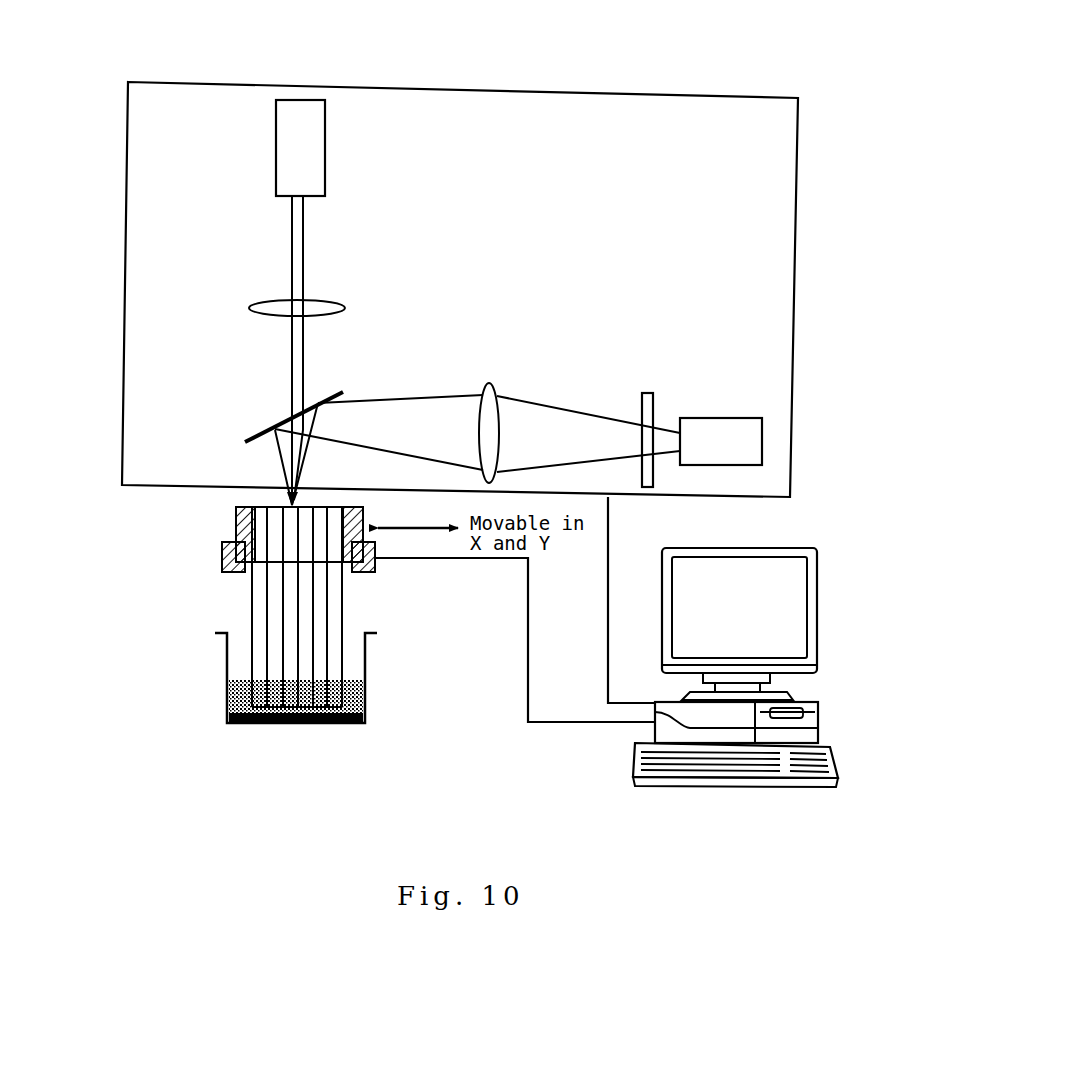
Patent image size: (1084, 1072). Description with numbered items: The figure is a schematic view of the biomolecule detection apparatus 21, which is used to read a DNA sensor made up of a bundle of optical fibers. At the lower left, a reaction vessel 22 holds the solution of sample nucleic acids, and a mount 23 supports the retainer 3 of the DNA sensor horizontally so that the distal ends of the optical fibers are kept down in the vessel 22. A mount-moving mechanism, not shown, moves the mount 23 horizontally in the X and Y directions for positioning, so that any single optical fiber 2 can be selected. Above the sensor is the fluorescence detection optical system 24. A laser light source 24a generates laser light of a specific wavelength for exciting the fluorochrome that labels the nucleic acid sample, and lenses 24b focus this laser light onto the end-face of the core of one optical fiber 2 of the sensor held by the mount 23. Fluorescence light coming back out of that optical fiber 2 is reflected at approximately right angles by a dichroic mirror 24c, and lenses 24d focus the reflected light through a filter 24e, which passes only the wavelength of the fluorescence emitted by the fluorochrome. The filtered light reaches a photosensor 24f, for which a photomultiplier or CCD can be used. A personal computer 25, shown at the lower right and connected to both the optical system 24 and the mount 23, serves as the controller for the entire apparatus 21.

The biomolecule detection apparatus 21 is at (478, 78).
The fluorescence detection optical system 24 is at (790, 228).
The laser light source 24a is at (315, 180).
The lenses 24b is at (327, 302).
The dichroic mirror 24c is at (327, 397).
The lenses 24d is at (490, 382).
The filter 24e is at (647, 393).
The photosensor 24f is at (725, 423).
The retainer 3 is at (235, 530).
The mount 23 is at (237, 562).
The optical fiber 2 is at (347, 597).
The reaction vessel 22 is at (366, 670).
The personal computer 25 is at (630, 760).